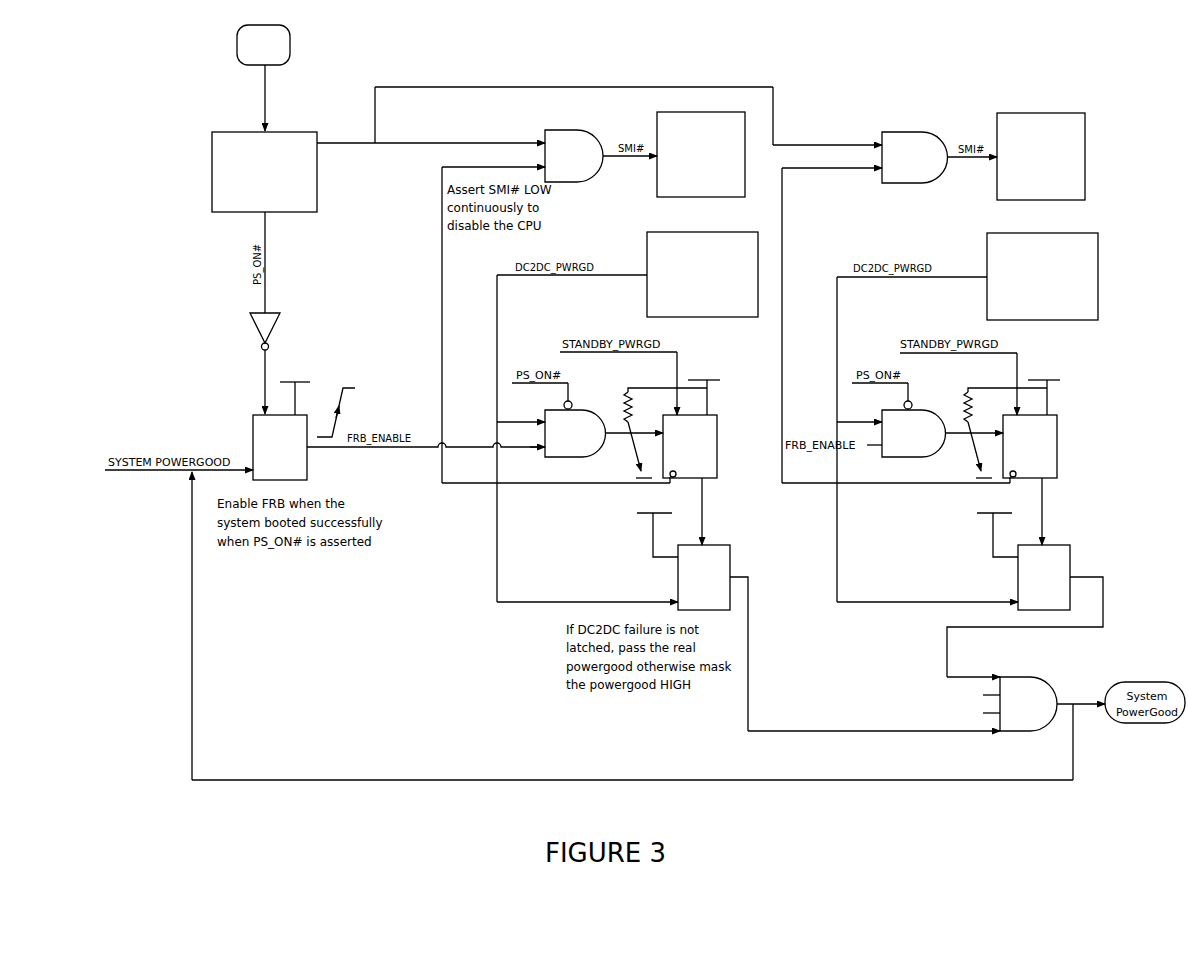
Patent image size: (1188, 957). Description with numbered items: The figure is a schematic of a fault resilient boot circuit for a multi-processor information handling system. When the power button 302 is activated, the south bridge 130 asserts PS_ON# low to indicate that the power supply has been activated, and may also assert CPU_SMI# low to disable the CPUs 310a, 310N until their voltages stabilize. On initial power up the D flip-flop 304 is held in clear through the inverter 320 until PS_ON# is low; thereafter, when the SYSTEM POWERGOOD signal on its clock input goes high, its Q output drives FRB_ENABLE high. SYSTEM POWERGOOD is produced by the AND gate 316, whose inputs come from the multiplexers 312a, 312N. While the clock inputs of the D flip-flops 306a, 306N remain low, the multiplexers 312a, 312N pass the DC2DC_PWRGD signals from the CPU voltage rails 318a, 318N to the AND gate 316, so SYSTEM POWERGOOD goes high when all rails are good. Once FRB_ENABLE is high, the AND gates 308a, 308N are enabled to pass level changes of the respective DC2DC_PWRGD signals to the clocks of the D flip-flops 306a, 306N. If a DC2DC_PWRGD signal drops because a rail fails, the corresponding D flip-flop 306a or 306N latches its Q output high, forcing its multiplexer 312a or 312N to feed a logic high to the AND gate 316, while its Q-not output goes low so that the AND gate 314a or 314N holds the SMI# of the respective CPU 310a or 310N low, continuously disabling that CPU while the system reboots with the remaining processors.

The power button 302 is at (291, 52).
The south bridge 130 is at (317, 190).
The inverter 320 is at (281, 322).
The D flip-flop 304 is at (252, 434).
The AND gate 314a is at (583, 166).
The AND gate 314N is at (924, 167).
The CPU 310a is at (655, 180).
The CPU 310N is at (1060, 112).
The CPU voltage rails 318a is at (735, 318).
The CPU voltage rails 318N is at (985, 288).
The AND gate 308a is at (585, 446).
The AND gate 308N is at (923, 446).
The D flip-flop 306a is at (717, 433).
The D flip-flop 306N is at (1057, 433).
The multiplexer 312a is at (718, 546).
The multiplexer 312N is at (1060, 546).
The AND gate 316 is at (1033, 714).